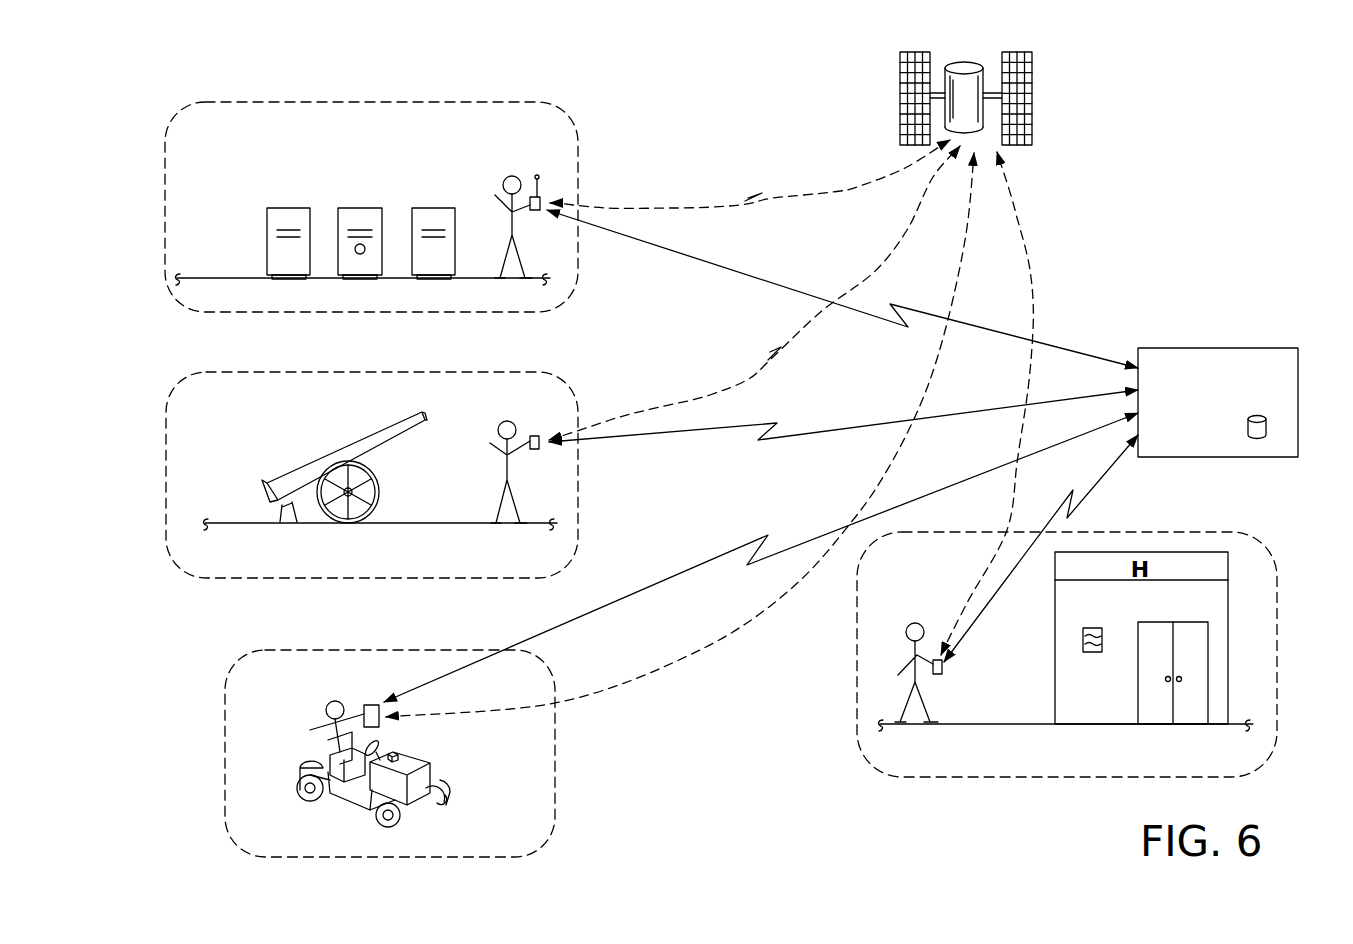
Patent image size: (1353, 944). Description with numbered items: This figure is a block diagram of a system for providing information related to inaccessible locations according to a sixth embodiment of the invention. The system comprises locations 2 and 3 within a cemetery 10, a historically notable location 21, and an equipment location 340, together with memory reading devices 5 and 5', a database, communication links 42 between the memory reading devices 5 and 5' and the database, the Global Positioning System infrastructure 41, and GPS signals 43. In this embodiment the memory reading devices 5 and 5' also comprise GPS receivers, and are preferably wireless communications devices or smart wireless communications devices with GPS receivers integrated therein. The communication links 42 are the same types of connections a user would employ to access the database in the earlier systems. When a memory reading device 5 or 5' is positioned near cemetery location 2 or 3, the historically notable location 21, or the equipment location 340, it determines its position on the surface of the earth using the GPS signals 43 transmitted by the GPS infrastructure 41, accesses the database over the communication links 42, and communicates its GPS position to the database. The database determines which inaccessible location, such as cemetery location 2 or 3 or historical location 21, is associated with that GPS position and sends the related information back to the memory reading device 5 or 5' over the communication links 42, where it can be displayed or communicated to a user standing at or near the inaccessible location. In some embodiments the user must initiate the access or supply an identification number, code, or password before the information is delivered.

The cemetery 10 is at (422, 98).
The cemetery location 2 is at (279, 282).
The cemetery location 3 is at (437, 282).
The memory reading device 5 is at (658, 451).
The historically notable location 21 is at (563, 376).
The memory reading device 5' is at (550, 467).
The equipment location 340 is at (559, 760).
The Global Positioning System infrastructure 41 is at (976, 62).
The communication links 42 is at (658, 250).
The GPS signals 43 is at (833, 197).